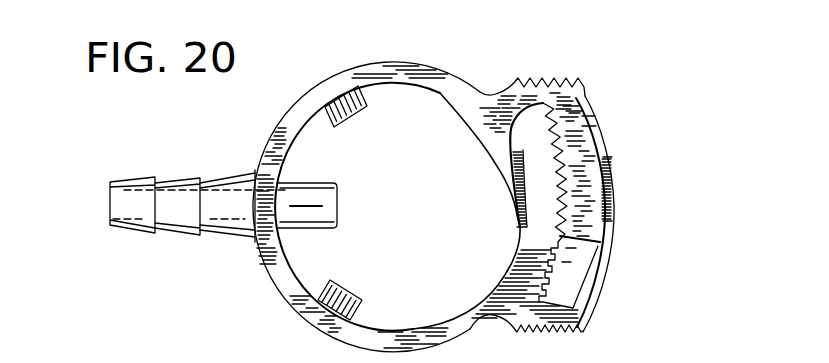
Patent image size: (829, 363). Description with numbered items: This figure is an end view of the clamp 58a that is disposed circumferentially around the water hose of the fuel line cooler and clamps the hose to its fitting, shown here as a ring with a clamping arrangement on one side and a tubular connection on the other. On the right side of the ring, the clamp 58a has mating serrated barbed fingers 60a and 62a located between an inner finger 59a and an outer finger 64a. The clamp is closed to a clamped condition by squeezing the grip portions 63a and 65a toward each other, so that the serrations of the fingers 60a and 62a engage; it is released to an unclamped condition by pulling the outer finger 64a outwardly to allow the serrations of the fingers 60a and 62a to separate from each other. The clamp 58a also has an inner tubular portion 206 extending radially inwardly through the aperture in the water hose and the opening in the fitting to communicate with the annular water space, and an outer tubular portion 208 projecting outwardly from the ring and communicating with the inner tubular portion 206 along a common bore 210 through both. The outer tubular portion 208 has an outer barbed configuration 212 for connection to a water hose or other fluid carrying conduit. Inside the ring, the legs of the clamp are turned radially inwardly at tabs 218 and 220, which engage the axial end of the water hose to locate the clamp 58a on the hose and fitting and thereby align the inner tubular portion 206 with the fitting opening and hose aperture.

The clamp 58a is at (309, 100).
The outer tubular portion 208 is at (182, 176).
The common bore 210 is at (110, 199).
The outer barbed configuration 212 is at (156, 234).
The inner tubular portion 206 is at (311, 182).
The tab 218 is at (360, 110).
The tab 220 is at (357, 284).
The serrated barbed finger 60a is at (540, 170).
The inner finger 59a is at (513, 219).
The grip portion 63a is at (557, 93).
The outer finger 64a is at (609, 163).
The serrated barbed finger 62a is at (590, 212).
The grip portion 65a is at (582, 332).